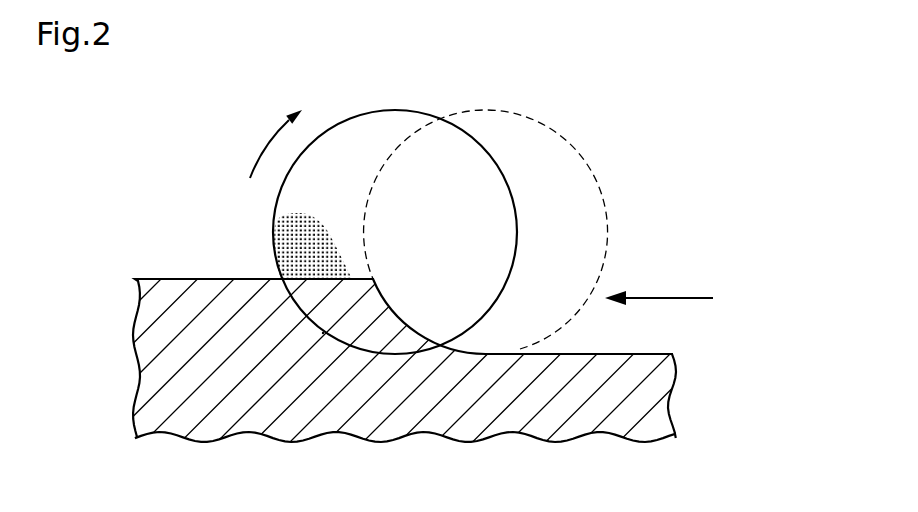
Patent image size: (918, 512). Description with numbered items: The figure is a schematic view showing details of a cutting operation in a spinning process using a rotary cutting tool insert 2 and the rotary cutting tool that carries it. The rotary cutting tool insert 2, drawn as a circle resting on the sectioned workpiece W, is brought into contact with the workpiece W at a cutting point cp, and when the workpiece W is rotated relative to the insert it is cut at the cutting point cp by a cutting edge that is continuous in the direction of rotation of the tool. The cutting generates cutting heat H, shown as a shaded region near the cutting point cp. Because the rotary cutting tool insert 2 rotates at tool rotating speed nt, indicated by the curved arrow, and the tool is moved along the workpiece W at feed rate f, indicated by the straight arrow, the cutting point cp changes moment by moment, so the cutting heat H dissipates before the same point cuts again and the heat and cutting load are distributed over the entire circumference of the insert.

The rotary cutting tool insert 2 is at (393, 108).
The workpiece W is at (643, 396).
The cutting heat H is at (295, 238).
The cutting point cp is at (323, 333).
The tool rotating speed nt is at (269, 144).
The feed rate f is at (659, 288).